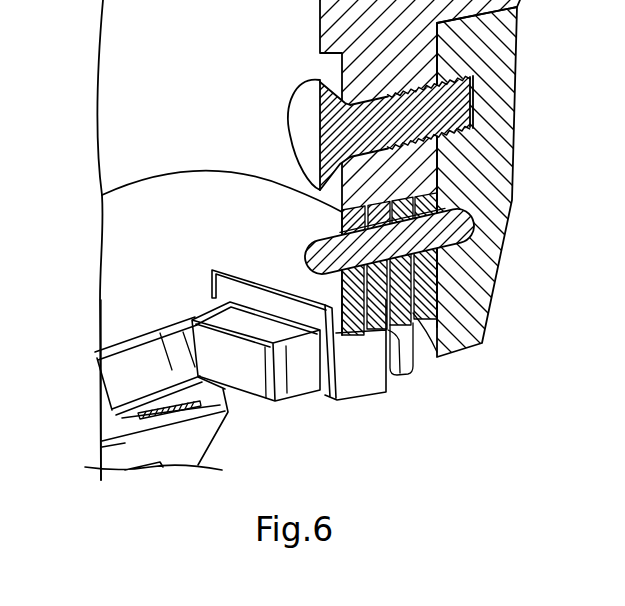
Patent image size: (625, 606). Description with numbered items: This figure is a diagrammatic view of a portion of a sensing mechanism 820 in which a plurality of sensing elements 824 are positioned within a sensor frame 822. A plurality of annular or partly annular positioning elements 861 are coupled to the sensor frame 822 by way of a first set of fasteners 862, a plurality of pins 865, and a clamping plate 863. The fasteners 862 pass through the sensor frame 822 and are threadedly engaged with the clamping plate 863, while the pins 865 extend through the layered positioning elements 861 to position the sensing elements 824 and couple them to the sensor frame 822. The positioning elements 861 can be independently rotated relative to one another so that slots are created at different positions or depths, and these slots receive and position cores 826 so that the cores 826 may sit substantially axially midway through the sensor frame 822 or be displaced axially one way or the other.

The sensing mechanism 820 is at (84, 277).
The sensor frame 822 is at (140, 48).
The sensing element 824 is at (293, 428).
The core 826 is at (350, 400).
The positioning element 861 is at (368, 218).
The fastener 862 is at (333, 95).
The clamping plate 863 is at (503, 40).
The pin 865 is at (447, 237).